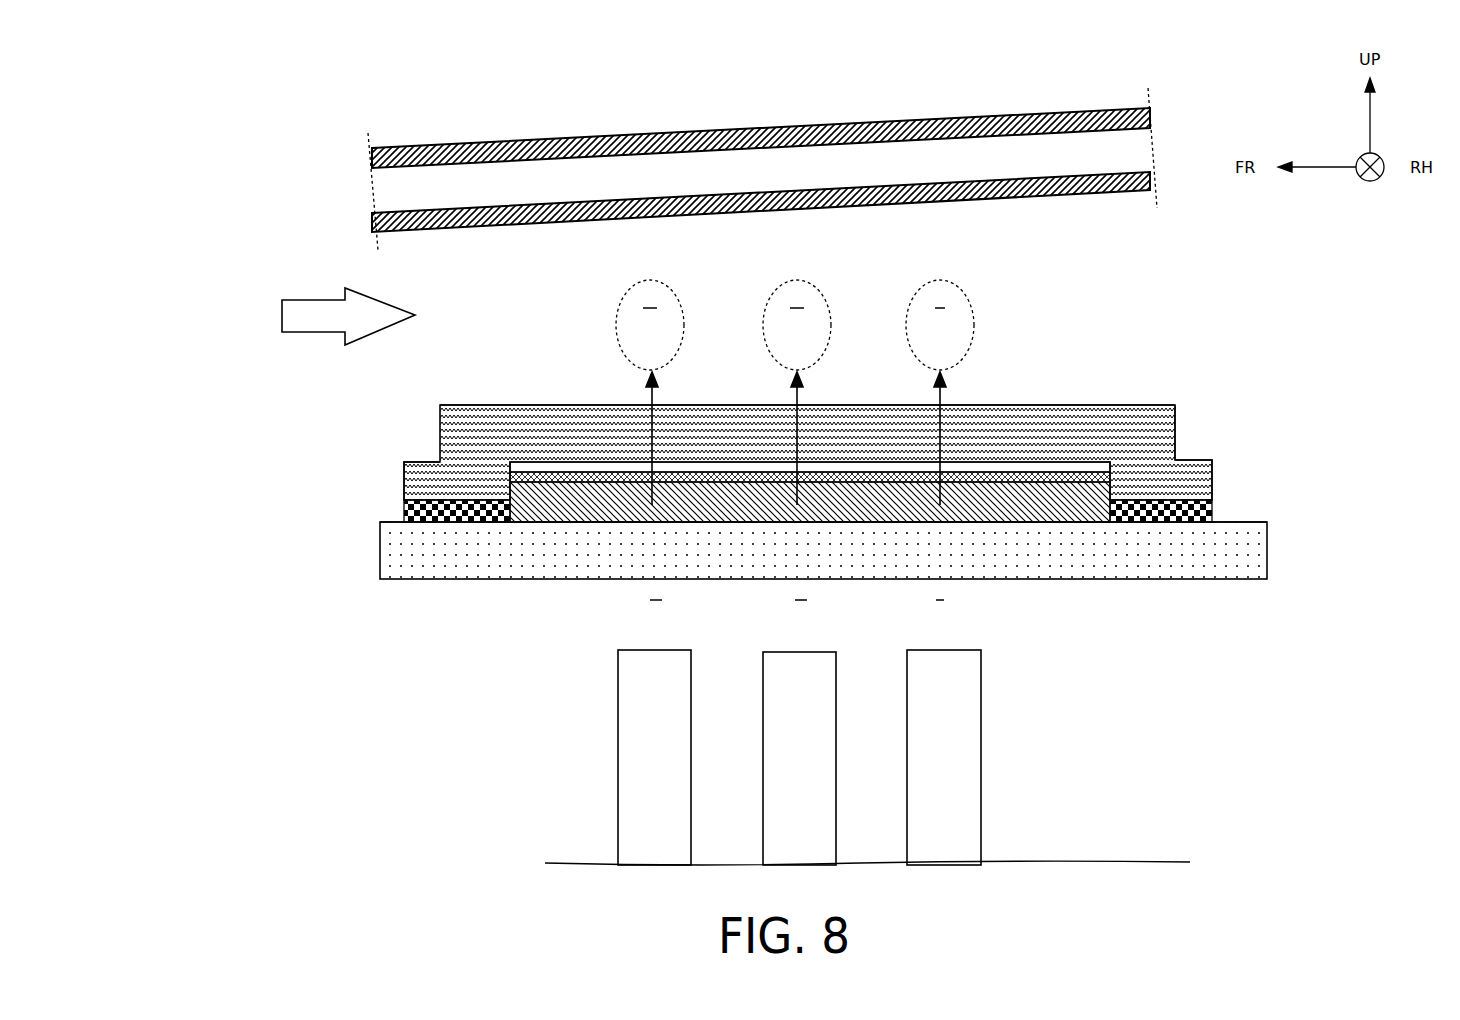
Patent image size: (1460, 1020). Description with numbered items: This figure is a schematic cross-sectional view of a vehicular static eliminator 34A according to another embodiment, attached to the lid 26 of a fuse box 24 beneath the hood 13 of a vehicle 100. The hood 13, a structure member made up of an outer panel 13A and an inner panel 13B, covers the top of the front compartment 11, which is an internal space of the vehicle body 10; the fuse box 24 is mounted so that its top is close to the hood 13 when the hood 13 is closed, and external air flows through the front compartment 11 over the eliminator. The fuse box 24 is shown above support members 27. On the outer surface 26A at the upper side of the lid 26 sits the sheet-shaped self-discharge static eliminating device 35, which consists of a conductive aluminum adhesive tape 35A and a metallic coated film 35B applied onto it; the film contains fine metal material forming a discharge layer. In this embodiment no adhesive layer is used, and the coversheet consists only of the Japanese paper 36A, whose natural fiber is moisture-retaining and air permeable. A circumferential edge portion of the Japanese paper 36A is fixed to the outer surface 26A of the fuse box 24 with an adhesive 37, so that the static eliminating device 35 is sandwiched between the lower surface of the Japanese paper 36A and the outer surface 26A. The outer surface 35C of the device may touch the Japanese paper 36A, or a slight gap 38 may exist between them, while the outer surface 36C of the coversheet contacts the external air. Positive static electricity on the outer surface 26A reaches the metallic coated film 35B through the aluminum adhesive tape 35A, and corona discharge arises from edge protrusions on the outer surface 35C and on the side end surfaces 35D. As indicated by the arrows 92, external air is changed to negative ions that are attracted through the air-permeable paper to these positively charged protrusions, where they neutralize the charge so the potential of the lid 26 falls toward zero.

The vehicle body 10 is at (323, 152).
The hood 13 is at (1082, 110).
The outer panel 13A is at (978, 115).
The inner panel 13B is at (1068, 190).
The front compartment 11 is at (318, 314).
The vehicle 100 is at (222, 416).
The vehicular static eliminator 34A is at (1370, 448).
The outer surface of the coversheet 36C is at (1112, 462).
The outer surface of the self-discharge static eliminating device 35C is at (1150, 405).
The side end surfaces of the self-discharge static eliminating device 35D is at (1112, 490).
The Japanese paper 36A is at (1213, 478).
The adhesive 37 is at (1213, 512).
The gap 38 is at (598, 465).
The self-discharge static eliminating device 35 is at (1323, 625).
The metallic coated film 35B is at (1030, 482).
The aluminum adhesive tape 35A is at (997, 512).
The lid 26 is at (380, 545).
The outer surface of the lid 26A is at (380, 522).
The arrows 92 is at (952, 413).
The fuse box 24 is at (270, 737).
The support columns 27 is at (981, 812).